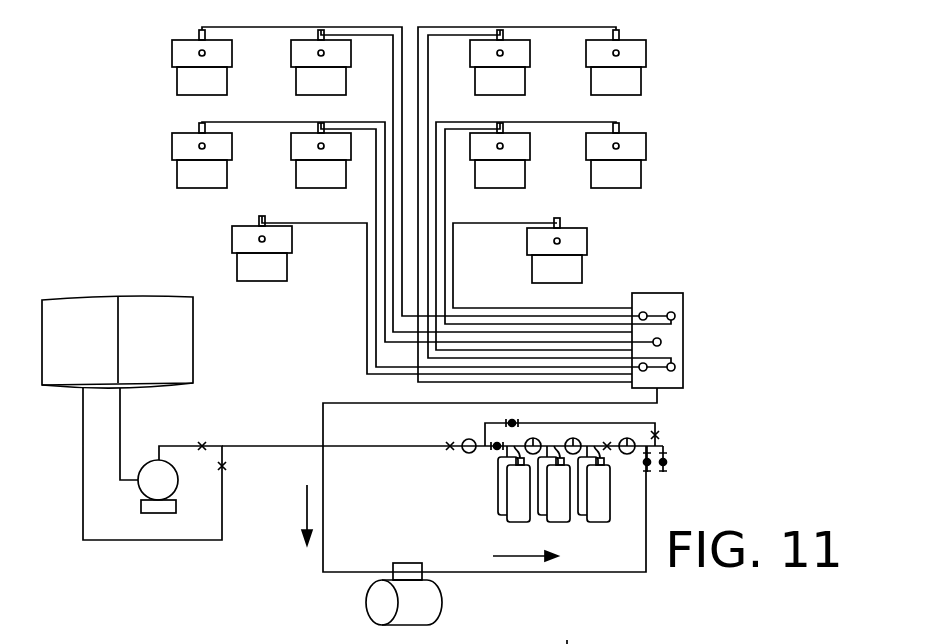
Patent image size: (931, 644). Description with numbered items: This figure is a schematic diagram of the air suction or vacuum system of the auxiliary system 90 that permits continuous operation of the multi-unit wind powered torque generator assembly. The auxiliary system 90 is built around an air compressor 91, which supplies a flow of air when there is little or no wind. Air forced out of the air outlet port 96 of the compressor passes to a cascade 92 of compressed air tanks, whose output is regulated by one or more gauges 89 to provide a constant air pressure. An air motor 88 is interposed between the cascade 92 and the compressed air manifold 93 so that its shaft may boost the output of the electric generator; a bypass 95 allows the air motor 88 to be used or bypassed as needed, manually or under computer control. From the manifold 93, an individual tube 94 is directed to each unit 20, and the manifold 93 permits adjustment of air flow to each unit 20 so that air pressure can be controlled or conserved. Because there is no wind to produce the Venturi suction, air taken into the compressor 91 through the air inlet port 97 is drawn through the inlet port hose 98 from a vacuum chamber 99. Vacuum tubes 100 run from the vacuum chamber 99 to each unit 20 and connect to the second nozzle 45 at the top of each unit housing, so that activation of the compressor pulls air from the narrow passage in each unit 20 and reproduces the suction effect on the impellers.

The unit 20 is at (647, 52).
The second nozzle 45 is at (200, 31).
The vacuum tubes 100 is at (284, 27).
The vacuum chamber 99 is at (673, 341).
The inlet port hose 98 is at (324, 490).
The manifold 93 is at (83, 300).
The bypass 95 is at (135, 541).
The air motor 88 is at (162, 483).
The auxiliary system 90 is at (708, 455).
The gauges 89 is at (457, 440).
The cascade of compressed air tanks 92 is at (494, 488).
The air inlet port 97 is at (394, 572).
The air outlet port 96 is at (424, 572).
The air compressor 91 is at (430, 600).
The individual tube 94 is at (567, 638).